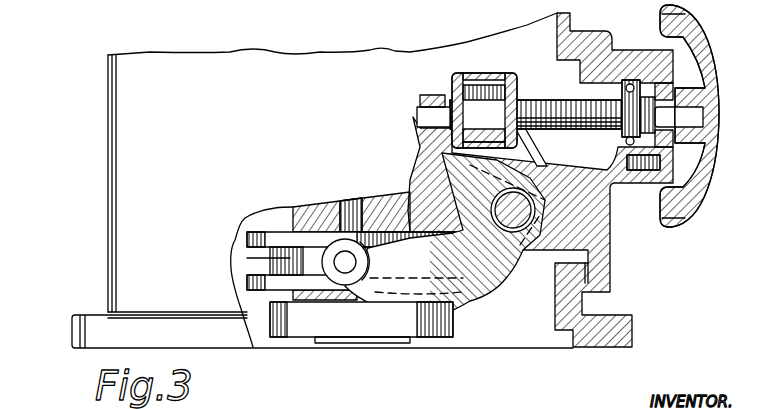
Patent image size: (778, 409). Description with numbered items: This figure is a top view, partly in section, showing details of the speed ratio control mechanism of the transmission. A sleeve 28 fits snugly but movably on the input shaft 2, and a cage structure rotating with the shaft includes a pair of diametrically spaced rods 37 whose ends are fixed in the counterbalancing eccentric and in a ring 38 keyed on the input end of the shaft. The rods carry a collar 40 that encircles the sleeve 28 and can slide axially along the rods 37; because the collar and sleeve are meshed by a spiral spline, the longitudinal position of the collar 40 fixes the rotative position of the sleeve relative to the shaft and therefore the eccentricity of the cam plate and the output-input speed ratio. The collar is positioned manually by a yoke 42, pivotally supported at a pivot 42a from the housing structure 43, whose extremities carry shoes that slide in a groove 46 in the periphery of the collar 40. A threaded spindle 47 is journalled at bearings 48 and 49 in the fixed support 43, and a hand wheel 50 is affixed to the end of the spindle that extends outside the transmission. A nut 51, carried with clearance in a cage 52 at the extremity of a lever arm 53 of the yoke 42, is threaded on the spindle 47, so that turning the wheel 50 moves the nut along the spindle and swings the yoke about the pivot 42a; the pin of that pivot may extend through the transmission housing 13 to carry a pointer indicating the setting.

The input shaft 2 is at (387, 340).
The transmission housing 13 is at (108, 229).
The sleeve 28 is at (385, 196).
The rods 37 is at (343, 201).
The ring 38 is at (305, 328).
The collar 40 is at (281, 232).
The yoke 42 is at (473, 300).
The pivot 42a is at (522, 223).
The housing structure 43 is at (573, 233).
The groove 46 is at (247, 258).
The threaded spindle 47 is at (555, 107).
The journal 48 is at (417, 112).
The journal 49 is at (630, 103).
The hand wheel 50 is at (697, 27).
The nut 51 is at (482, 93).
The cage 52 is at (490, 75).
The lever arm 53 is at (523, 153).